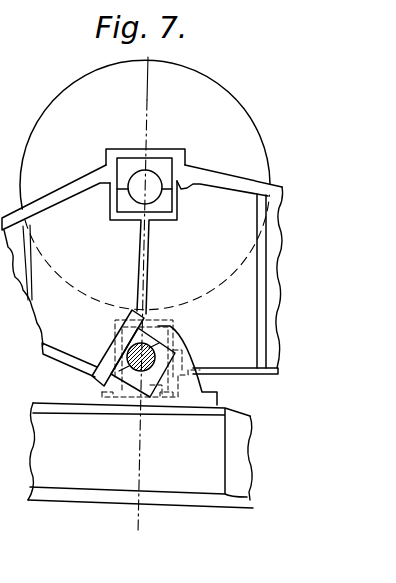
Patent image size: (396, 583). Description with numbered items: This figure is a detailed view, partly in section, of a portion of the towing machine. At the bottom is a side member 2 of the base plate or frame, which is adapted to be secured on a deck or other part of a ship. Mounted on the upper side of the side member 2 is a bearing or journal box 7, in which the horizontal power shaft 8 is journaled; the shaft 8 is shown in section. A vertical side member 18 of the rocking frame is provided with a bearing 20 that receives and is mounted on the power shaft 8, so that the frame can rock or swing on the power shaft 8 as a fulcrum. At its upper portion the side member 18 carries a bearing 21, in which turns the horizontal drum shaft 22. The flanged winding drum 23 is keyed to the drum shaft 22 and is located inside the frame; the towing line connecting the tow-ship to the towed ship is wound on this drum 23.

The side members 2 is at (178, 478).
The bearing 7 is at (186, 357).
The power shaft 8 is at (162, 73).
The side members 18 is at (240, 205).
The bearing 20 is at (176, 326).
The bearing 21 is at (162, 158).
The drum shaft 22 is at (140, 173).
The winding drum 23 is at (213, 95).